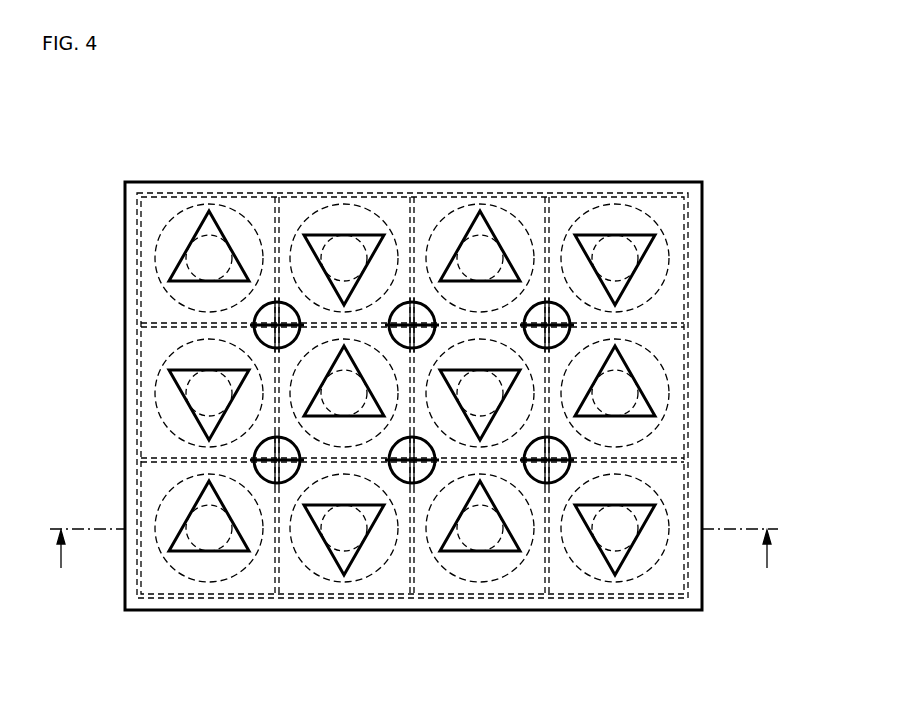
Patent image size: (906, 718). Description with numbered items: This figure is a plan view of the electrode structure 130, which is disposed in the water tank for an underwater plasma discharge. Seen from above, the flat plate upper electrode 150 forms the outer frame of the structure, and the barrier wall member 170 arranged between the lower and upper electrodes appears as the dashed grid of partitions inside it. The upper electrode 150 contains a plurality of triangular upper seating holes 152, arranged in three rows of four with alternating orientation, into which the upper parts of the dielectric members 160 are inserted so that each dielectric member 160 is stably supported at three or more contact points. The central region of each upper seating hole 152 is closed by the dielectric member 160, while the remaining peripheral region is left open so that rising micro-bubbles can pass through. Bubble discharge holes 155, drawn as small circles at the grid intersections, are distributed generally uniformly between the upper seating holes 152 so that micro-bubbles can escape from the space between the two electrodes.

The electrode structure 130 is at (680, 116).
The upper electrode 150 is at (548, 182).
The upper seating hole 152 is at (236, 549).
The bubble discharge hole 155 is at (292, 302).
The dielectric member 160 is at (186, 207).
The barrier wall member 170 is at (463, 195).